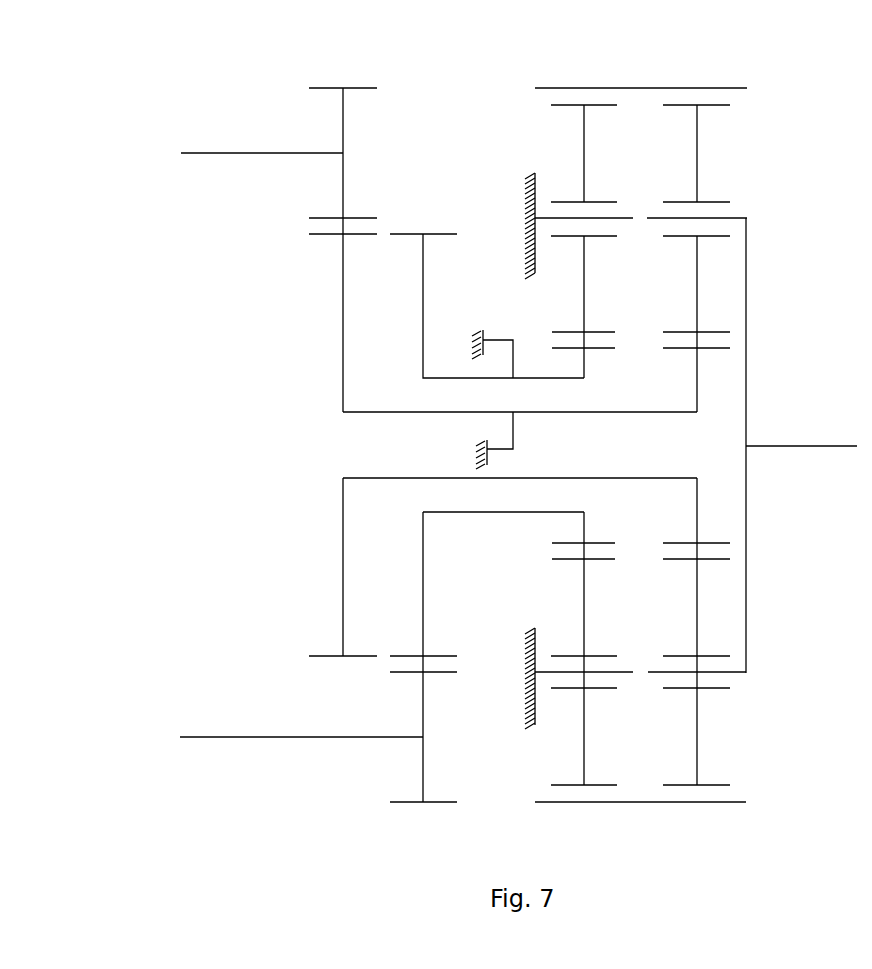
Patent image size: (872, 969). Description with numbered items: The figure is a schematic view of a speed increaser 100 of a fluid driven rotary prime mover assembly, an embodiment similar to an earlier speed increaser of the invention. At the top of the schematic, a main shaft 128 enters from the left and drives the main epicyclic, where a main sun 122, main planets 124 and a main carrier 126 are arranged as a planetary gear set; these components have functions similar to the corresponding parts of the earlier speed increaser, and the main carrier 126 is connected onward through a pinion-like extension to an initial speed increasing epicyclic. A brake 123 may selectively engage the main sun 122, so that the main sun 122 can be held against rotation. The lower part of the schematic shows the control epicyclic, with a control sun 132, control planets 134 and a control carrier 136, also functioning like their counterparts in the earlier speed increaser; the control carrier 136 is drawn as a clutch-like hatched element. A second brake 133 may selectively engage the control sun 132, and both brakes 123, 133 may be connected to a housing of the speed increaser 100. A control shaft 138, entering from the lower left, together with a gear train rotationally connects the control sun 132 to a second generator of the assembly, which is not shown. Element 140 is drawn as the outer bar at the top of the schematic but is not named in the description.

The speed increaser 100 is at (100, 137).
The main sun 122 is at (697, 400).
The brake 123 is at (513, 433).
The main planets 124 is at (697, 170).
The main carrier 126 is at (830, 446).
The main shaft 128 is at (230, 153).
The control sun 132 is at (584, 365).
The brake 133 is at (500, 340).
The control planets 134 is at (584, 148).
The control carrier 136 is at (527, 177).
The control shaft 138 is at (244, 737).
The housing 140 is at (663, 88).